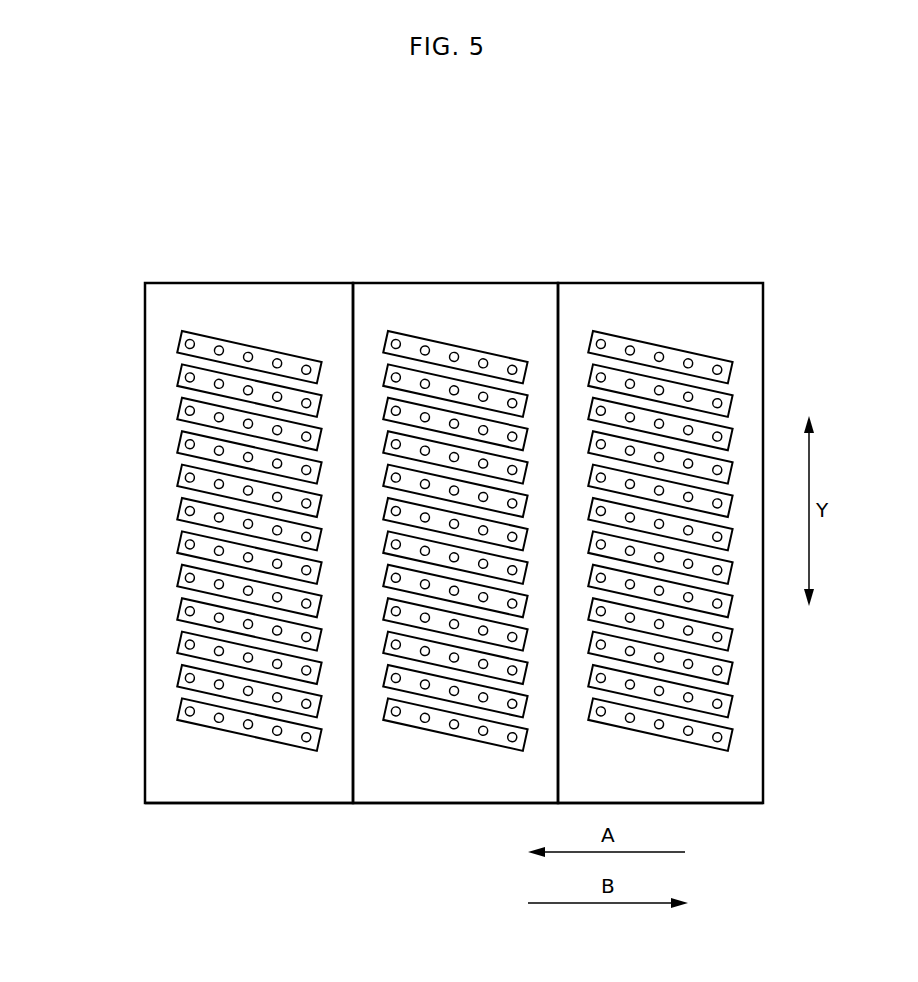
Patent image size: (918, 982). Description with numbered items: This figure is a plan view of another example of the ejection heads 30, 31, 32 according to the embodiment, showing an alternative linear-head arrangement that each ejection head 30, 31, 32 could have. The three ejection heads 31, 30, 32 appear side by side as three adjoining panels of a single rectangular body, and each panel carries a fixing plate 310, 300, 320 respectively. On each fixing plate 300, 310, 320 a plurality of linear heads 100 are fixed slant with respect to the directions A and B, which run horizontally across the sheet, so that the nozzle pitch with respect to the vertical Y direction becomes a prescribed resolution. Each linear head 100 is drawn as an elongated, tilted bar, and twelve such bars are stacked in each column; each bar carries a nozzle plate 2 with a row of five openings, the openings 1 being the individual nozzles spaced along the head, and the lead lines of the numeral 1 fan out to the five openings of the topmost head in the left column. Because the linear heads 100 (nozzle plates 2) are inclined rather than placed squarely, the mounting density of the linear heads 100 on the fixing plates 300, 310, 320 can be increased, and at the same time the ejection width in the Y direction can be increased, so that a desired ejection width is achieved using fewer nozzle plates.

The through hole 1 is at (306, 368).
The nozzle plate 2 is at (454, 470).
The linear head 100 is at (385, 470).
The ejection head 30 is at (482, 282).
The ejection head 31 is at (308, 282).
The ejection head 32 is at (670, 282).
The fixing plate 300 is at (407, 797).
The fixing plate 310 is at (211, 792).
The fixing plate 320 is at (703, 795).